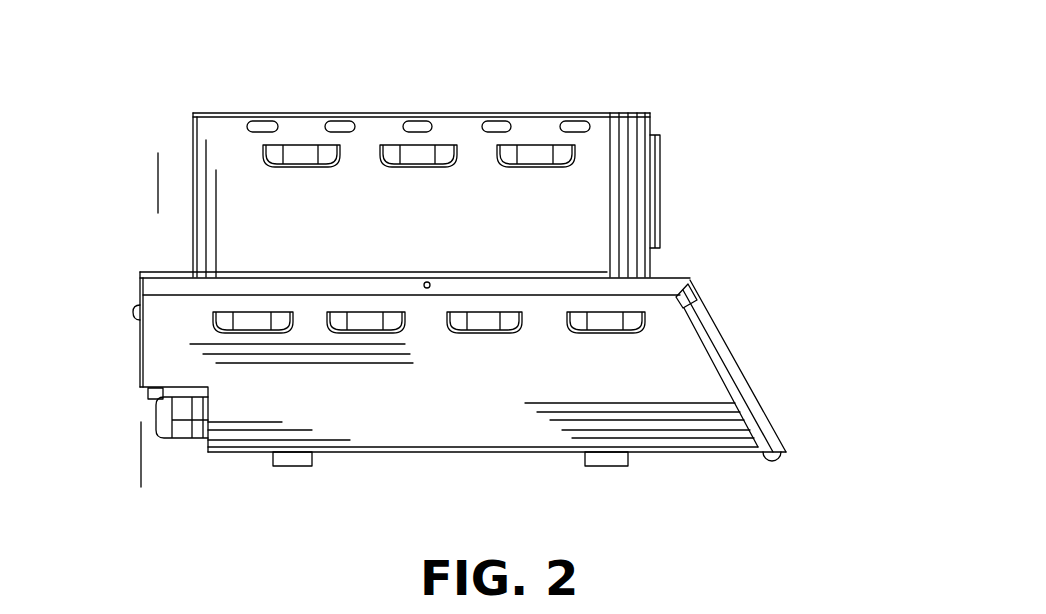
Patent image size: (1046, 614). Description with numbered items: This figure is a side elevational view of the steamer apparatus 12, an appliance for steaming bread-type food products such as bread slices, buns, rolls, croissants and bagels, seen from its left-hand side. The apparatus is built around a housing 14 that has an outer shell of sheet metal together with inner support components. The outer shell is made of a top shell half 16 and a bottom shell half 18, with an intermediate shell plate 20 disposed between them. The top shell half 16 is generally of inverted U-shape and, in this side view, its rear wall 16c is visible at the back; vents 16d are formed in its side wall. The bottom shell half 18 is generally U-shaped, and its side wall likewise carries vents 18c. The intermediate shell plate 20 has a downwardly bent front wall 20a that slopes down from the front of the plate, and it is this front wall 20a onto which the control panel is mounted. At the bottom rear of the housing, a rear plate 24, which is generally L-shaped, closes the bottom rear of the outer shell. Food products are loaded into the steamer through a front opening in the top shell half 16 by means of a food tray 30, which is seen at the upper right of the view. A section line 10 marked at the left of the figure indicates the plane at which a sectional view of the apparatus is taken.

The section line indicator 10 is at (178, 163).
The steamer apparatus 12 is at (440, 253).
The housing 14 is at (137, 266).
The top shell half 16 is at (454, 153).
The rear wall 16c is at (192, 125).
The vents 16d is at (540, 150).
The bottom shell half 18 is at (439, 341).
The vents 18c is at (403, 323).
The intermediate shell plate 20 is at (225, 283).
The front wall 20a is at (738, 365).
The rear plate 24 is at (140, 333).
The food tray 30 is at (663, 188).